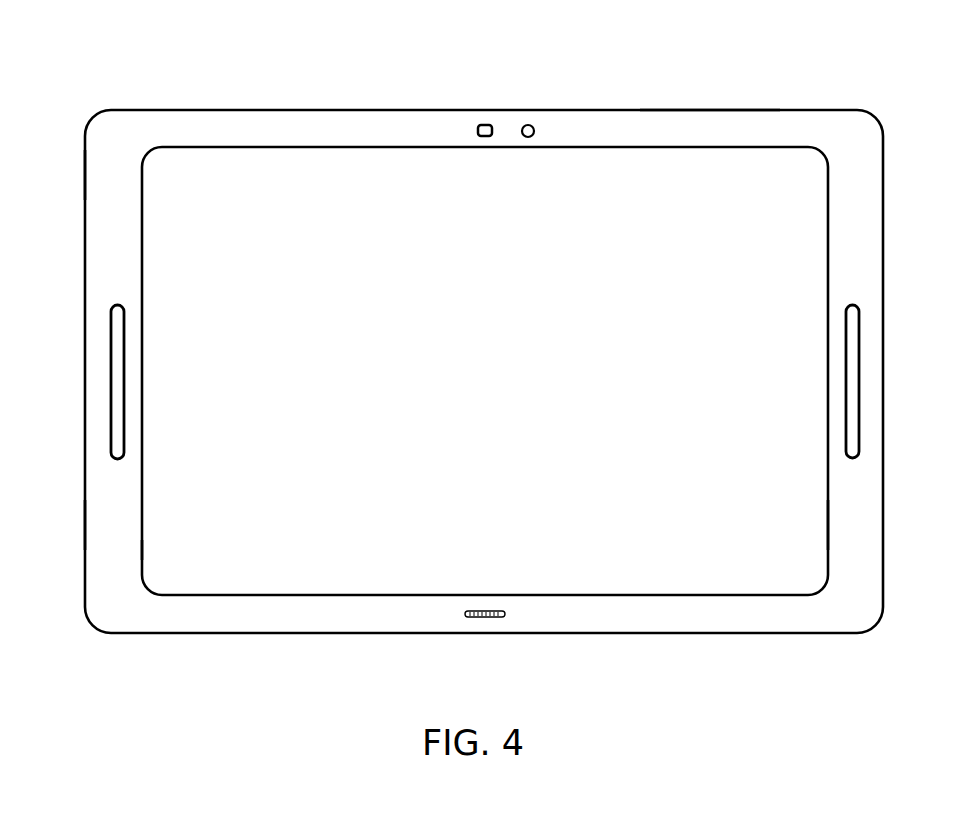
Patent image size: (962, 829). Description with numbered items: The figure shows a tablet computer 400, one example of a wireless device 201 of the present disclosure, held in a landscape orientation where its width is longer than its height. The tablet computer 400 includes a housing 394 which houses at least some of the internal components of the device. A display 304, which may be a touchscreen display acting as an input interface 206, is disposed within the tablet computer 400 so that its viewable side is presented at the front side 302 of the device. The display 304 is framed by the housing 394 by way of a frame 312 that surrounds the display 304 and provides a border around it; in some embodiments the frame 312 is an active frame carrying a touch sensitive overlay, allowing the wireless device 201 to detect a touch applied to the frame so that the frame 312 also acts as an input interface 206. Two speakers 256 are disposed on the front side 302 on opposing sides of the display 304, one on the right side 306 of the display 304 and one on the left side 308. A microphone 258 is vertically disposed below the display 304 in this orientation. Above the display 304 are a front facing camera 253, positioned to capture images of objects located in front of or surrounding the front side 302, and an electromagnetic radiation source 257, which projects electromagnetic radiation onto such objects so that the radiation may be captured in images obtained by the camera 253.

The wireless device 201 is at (153, 92).
The tablet computer 400 is at (253, 92).
The input interface 206 is at (347, 145).
The front facing camera 253 is at (477, 122).
The electromagnetic radiation source 257 is at (530, 122).
The housing 394 is at (705, 110).
The frame 312 is at (103, 172).
The display 304 is at (248, 209).
The speakers 256 is at (111, 388).
The front side 302 is at (92, 525).
The left side 308 is at (142, 562).
The right side 306 is at (828, 523).
The microphone 258 is at (485, 619).